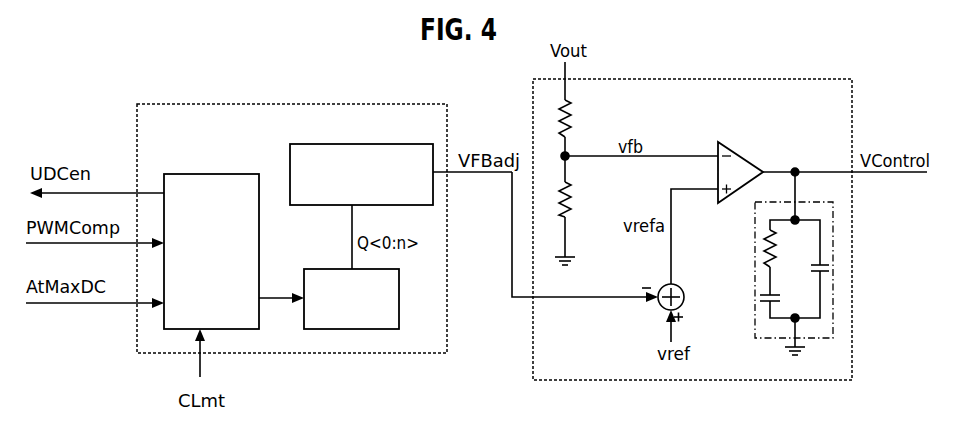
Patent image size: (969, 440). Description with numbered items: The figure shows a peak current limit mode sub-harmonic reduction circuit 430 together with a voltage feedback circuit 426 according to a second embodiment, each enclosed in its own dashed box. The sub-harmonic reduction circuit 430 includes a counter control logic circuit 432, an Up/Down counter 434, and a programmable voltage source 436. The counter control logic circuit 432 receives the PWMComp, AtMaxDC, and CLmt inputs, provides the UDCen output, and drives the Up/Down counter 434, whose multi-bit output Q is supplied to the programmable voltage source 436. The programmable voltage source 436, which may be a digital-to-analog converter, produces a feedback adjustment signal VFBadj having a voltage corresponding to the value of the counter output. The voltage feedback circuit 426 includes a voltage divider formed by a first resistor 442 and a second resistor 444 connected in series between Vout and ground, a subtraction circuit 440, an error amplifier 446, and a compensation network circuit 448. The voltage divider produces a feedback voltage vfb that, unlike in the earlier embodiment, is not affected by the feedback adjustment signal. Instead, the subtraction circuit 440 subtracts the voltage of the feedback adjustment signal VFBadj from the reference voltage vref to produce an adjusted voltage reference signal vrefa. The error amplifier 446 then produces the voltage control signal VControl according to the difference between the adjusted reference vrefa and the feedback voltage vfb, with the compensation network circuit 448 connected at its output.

The voltage feedback circuit 426 is at (763, 79).
The sub-harmonic reduction circuit 430 is at (291, 103).
The counter control logic circuit 432 is at (193, 174).
The Up/Down (U/D) counter 434 is at (330, 269).
The programmable voltage source 436 is at (307, 144).
The subtraction circuit 440 is at (663, 287).
The first resistor 442 is at (572, 111).
The second resistor 444 is at (572, 191).
The error amplifier 446 is at (747, 155).
The compensation network circuit 448 is at (755, 254).